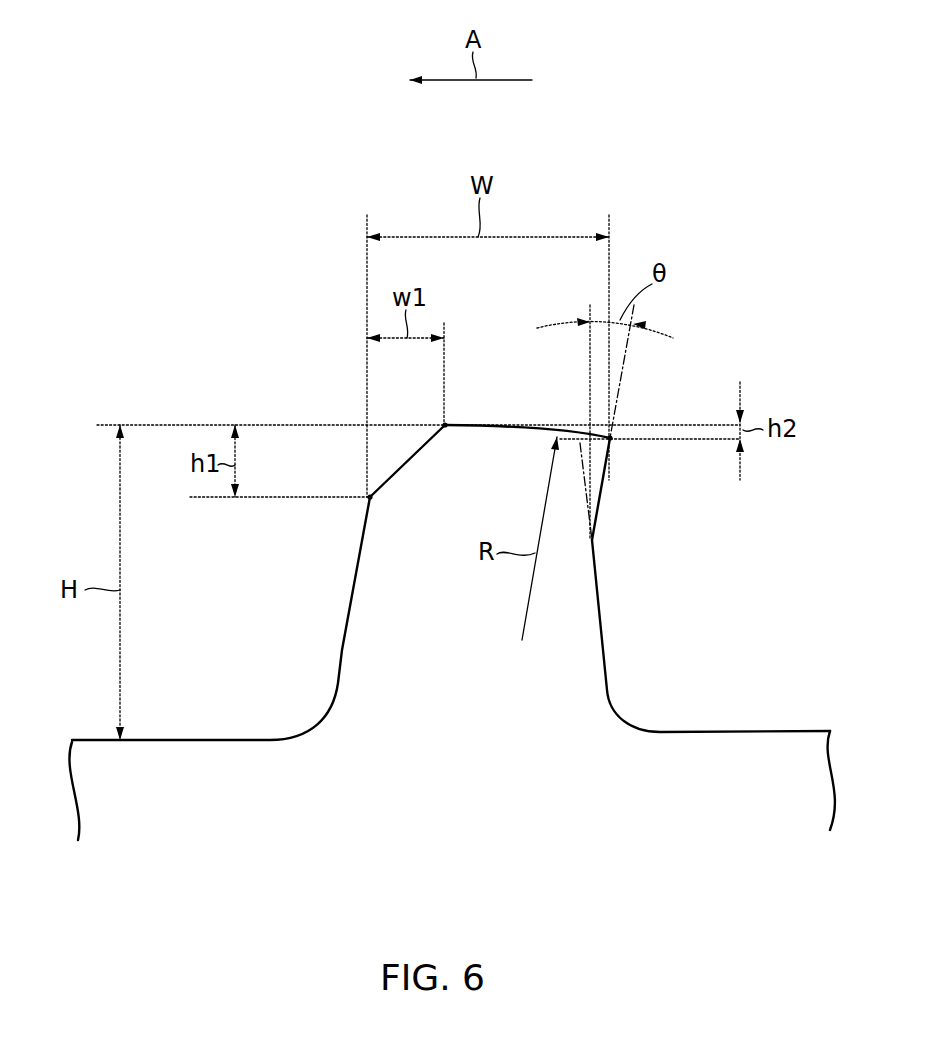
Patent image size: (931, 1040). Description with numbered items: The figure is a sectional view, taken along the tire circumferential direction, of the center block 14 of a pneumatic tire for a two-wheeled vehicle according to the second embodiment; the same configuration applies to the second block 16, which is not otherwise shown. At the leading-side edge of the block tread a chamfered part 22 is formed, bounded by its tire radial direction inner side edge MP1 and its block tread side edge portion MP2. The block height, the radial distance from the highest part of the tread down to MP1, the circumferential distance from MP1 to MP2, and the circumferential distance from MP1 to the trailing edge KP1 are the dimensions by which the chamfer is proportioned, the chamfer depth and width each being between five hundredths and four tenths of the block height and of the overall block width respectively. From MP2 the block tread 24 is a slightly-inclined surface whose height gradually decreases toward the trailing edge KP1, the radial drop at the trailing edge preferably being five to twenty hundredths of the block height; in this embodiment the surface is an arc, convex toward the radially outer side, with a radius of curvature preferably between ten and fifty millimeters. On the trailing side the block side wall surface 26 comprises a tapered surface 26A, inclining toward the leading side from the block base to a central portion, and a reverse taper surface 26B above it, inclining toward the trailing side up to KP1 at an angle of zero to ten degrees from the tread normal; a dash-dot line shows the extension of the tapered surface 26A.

The center block 14 is at (340, 650).
The second block 16 is at (219, 668).
The chamfered part 22 is at (400, 468).
The block tread 24 is at (570, 425).
The block side wall surface 26 is at (698, 562).
The tapered surface 26A is at (605, 668).
The reverse taper surface 26B is at (601, 490).
The tire radial direction inner side edge of chamfered part MP1 is at (370, 496).
The block tread side edge portion of chamfered part MP2 is at (443, 425).
The trailing edge of block tread KP1 is at (612, 438).